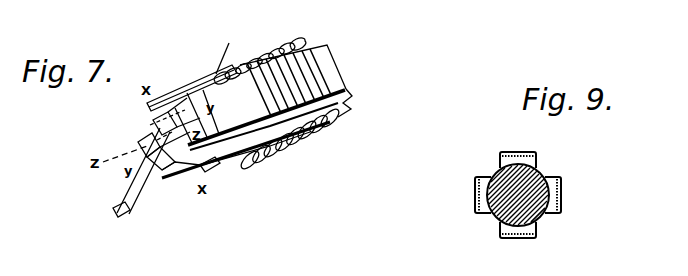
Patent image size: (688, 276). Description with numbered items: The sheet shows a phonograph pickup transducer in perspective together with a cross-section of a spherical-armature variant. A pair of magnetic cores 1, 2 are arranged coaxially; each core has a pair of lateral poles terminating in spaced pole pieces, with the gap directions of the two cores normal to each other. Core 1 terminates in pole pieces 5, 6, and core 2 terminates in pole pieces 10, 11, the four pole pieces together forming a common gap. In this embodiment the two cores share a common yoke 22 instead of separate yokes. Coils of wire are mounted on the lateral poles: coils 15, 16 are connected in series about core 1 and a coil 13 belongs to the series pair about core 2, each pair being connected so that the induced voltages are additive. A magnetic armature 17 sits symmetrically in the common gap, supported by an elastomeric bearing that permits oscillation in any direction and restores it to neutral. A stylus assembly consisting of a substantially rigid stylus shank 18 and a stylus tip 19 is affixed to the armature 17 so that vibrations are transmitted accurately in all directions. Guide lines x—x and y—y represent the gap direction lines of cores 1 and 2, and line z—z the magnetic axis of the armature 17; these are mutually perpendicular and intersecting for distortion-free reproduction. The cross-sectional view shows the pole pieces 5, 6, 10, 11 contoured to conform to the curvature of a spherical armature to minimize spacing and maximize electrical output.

In FIG. 7, the magnetic core 1 is at (188, 78).
In FIG. 7, the magnetic core 2 is at (220, 83).
In FIG. 7, the pole piece 5 is at (218, 172).
In FIG. 9, the pole piece 5 is at (517, 238).
In FIG. 7, the pole piece 6 is at (160, 95).
In FIG. 9, the pole piece 6 is at (517, 152).
In FIG. 7, the pole piece 10 is at (203, 82).
In FIG. 9, the pole piece 10 is at (561, 191).
In FIG. 7, the pole piece 11 is at (168, 172).
In FIG. 9, the pole piece 11 is at (476, 203).
In FIG. 7, the coil 13 is at (312, 69).
In FIG. 7, the coil 15 is at (310, 140).
In FIG. 7, the coil 16 is at (276, 46).
In FIG. 7, the magnetic armature 17 is at (168, 130).
In FIG. 9, the magnetic armature 17 is at (540, 215).
In FIG. 7, the stylus shank 18 is at (162, 176).
In FIG. 7, the stylus tip 19 is at (116, 214).
In FIG. 7, the common yoke 22 is at (351, 108).